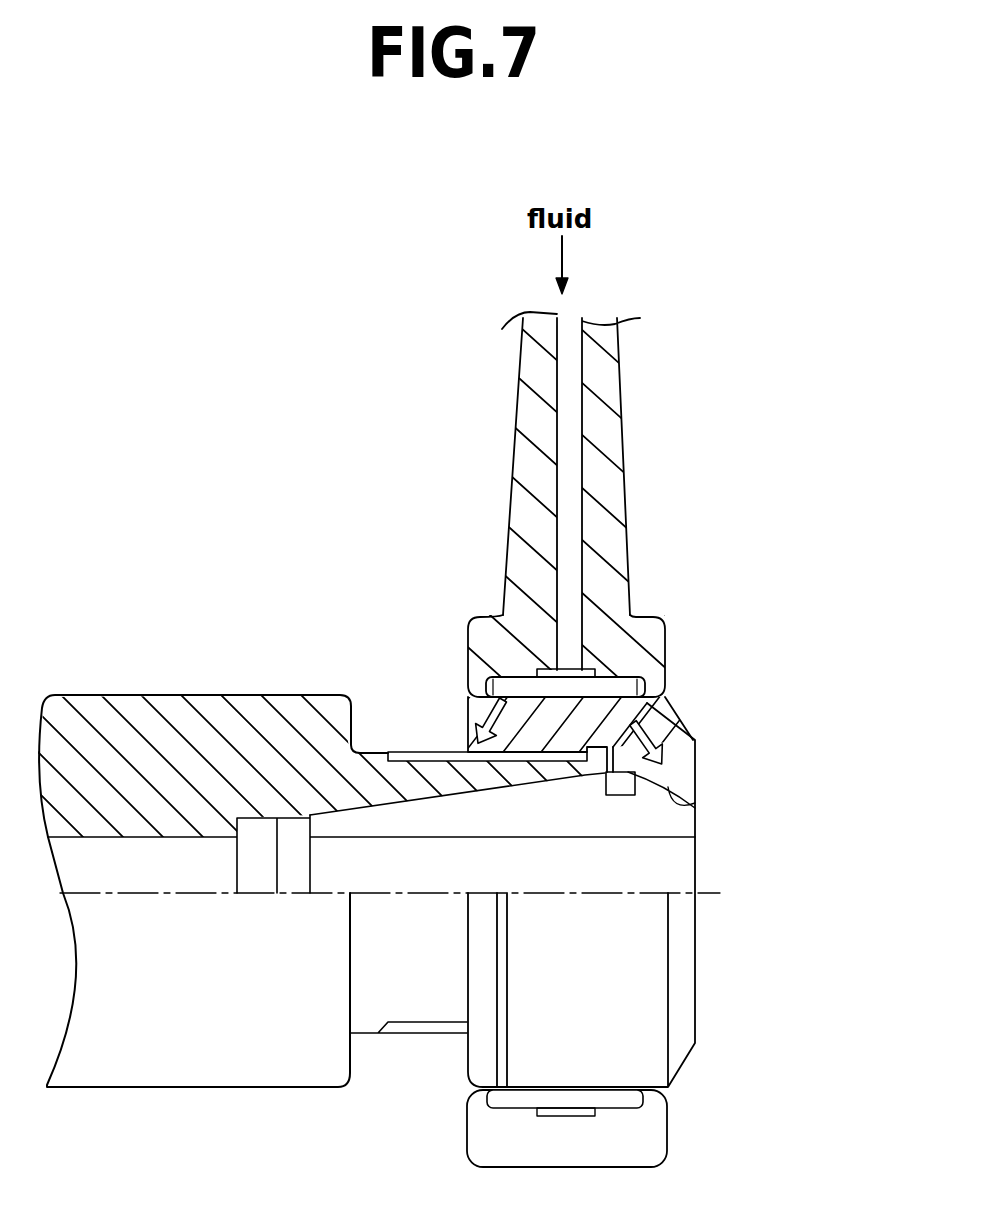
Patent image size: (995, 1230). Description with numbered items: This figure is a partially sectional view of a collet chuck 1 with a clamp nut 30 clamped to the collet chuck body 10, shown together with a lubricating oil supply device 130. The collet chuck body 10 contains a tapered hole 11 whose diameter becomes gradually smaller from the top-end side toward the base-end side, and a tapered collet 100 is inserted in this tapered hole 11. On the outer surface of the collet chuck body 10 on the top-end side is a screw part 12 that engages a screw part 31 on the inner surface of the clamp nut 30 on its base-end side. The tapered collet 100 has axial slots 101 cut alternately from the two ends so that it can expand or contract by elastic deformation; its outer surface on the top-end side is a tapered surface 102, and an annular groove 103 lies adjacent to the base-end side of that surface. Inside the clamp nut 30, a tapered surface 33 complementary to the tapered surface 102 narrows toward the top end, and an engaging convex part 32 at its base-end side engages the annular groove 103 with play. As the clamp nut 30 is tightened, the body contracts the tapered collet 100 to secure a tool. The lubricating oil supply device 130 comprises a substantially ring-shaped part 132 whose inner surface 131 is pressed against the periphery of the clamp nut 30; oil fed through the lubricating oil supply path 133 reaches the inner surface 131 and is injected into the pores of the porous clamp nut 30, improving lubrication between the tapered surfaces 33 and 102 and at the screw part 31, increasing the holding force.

The pipe joint structure 1 is at (752, 1025).
The collet chuck body 10 is at (170, 720).
The tapered hole 11 is at (360, 822).
The screw part 12 is at (460, 752).
The clamp nut 30 is at (623, 837).
The screw part 31 is at (498, 767).
The engaging convex part 32 is at (620, 757).
The tapered surface 33 is at (665, 752).
The tapered collet 100 is at (679, 895).
The slots 101 is at (433, 818).
The tapered surface 102 is at (698, 808).
The annular groove 103 is at (675, 820).
The lubricating oil supply device 130 is at (636, 529).
The inner surface 131 is at (645, 692).
The substantially ring-shaped part 132 is at (665, 650).
The lubricating oil supply path 133 is at (575, 547).